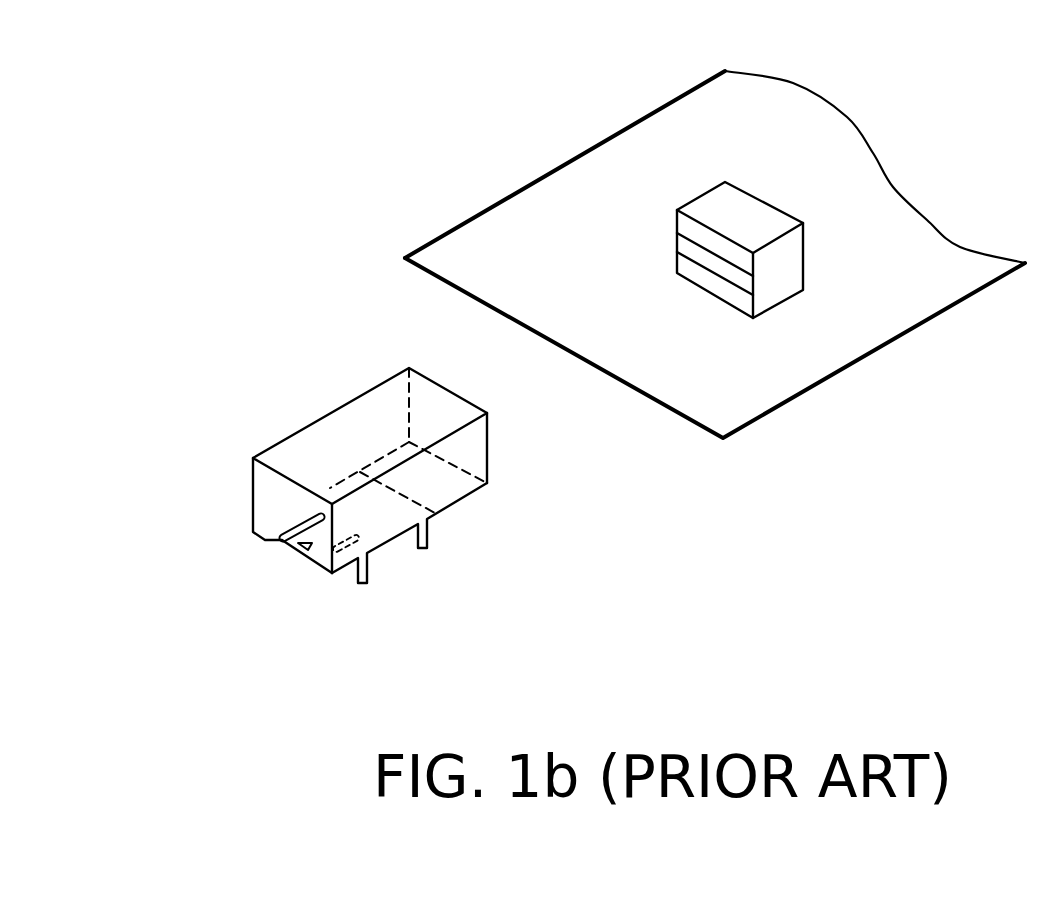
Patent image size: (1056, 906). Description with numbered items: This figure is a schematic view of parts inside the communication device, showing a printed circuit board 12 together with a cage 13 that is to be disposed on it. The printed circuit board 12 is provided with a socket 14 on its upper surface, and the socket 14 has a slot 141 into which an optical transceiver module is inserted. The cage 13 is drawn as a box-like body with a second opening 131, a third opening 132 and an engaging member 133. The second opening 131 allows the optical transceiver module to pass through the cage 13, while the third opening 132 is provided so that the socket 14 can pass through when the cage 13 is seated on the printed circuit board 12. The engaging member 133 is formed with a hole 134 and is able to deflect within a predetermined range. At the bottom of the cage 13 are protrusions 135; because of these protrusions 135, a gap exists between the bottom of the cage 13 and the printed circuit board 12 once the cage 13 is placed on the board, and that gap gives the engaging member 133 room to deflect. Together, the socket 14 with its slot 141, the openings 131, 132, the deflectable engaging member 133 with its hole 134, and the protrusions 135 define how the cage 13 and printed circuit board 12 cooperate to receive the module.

The printed circuit board 12 is at (555, 207).
The cage 13 is at (343, 437).
The socket 14 is at (732, 217).
The second opening 131 is at (267, 495).
The third opening 132 is at (430, 490).
The engaging member 133 is at (302, 557).
The hole 134 is at (290, 552).
The protrusions 135 is at (362, 582).
The slot 141 is at (732, 273).